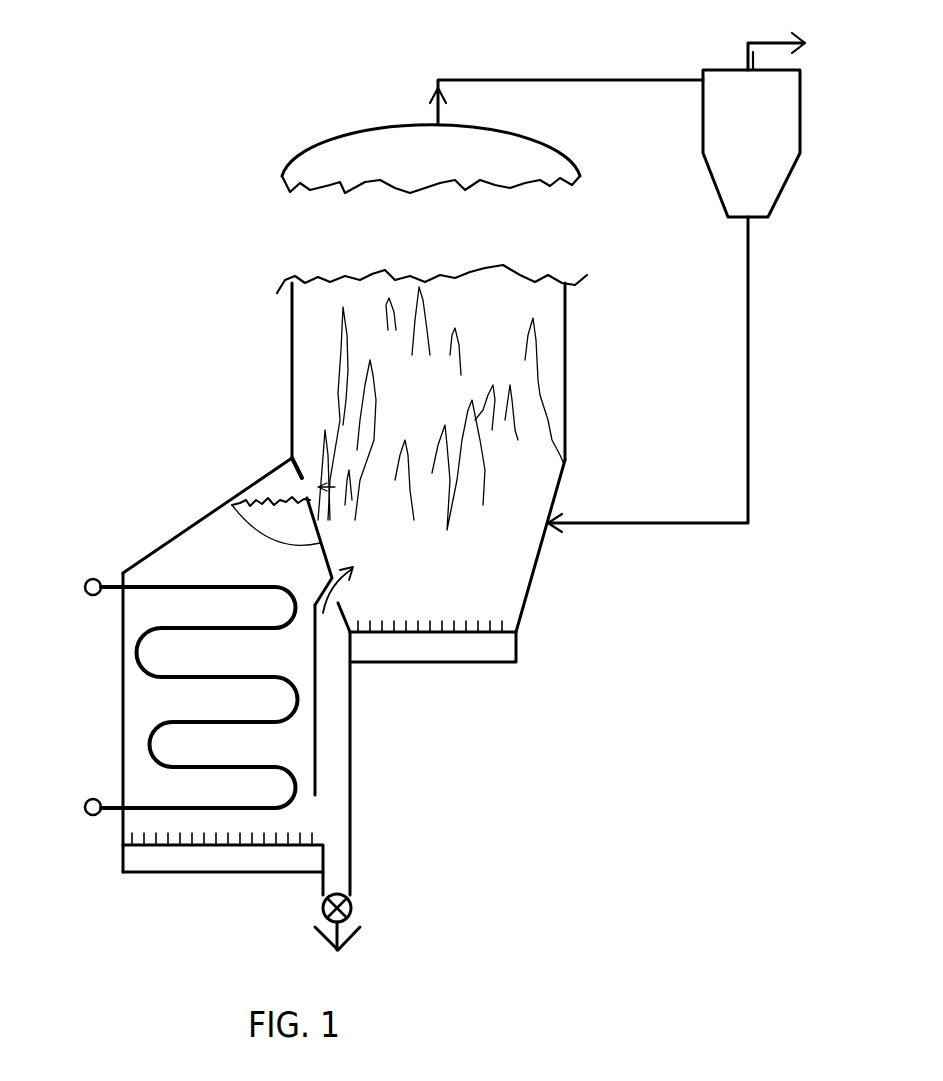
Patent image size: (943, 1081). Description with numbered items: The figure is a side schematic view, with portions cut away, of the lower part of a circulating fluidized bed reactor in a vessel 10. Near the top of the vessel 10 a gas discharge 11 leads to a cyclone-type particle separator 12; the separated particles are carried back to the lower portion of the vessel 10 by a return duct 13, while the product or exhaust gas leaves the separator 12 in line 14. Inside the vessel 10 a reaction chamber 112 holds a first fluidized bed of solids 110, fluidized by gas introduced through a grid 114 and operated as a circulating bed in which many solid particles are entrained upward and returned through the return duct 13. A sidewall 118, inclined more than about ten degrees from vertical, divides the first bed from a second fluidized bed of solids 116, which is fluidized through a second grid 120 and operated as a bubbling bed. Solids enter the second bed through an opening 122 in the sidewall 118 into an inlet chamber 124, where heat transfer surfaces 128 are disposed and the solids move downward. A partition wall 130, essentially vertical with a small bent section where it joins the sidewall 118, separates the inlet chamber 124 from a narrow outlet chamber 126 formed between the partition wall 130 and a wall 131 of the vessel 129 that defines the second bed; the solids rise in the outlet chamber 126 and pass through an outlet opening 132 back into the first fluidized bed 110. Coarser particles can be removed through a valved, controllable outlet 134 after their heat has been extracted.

The vessel 10 is at (295, 153).
The gas discharge 11 is at (518, 77).
The particle separator 12 is at (780, 137).
The return duct 13 is at (750, 350).
The line 14 is at (747, 54).
The first fluidized bed of solids 110 is at (497, 502).
The reaction chamber 112 is at (443, 402).
The grid 114 is at (500, 645).
The second fluidized bed of solids 116 is at (170, 573).
The sidewall 118 is at (233, 503).
The second grid 120 is at (153, 857).
The opening 122 is at (308, 483).
The inlet chamber 124 is at (228, 714).
The outlet chamber 126 is at (340, 688).
The heat transfer surfaces 128 is at (135, 632).
The vessel 129 is at (122, 708).
The partition wall 130 is at (318, 760).
The wall 131 is at (350, 757).
The outlet opening 132 is at (337, 603).
The outlet 134 is at (358, 908).